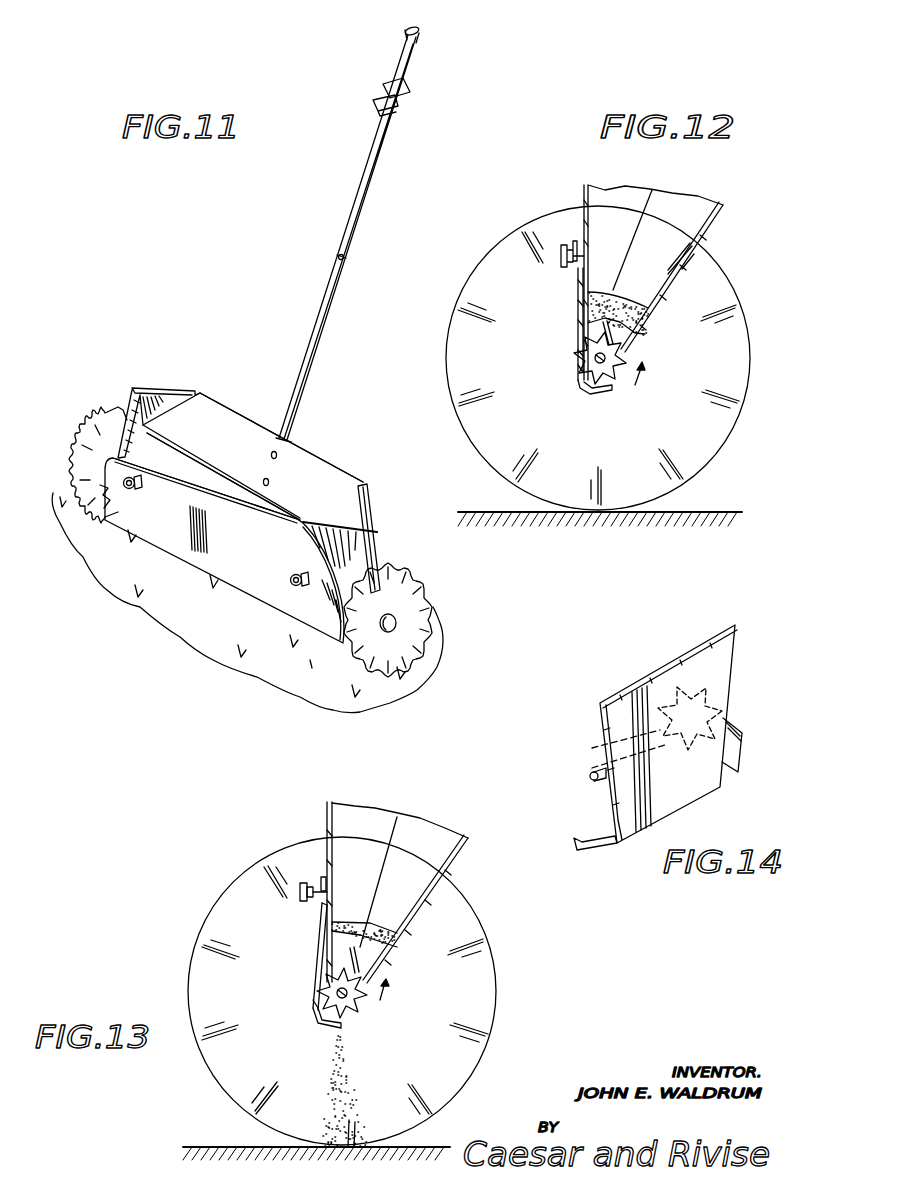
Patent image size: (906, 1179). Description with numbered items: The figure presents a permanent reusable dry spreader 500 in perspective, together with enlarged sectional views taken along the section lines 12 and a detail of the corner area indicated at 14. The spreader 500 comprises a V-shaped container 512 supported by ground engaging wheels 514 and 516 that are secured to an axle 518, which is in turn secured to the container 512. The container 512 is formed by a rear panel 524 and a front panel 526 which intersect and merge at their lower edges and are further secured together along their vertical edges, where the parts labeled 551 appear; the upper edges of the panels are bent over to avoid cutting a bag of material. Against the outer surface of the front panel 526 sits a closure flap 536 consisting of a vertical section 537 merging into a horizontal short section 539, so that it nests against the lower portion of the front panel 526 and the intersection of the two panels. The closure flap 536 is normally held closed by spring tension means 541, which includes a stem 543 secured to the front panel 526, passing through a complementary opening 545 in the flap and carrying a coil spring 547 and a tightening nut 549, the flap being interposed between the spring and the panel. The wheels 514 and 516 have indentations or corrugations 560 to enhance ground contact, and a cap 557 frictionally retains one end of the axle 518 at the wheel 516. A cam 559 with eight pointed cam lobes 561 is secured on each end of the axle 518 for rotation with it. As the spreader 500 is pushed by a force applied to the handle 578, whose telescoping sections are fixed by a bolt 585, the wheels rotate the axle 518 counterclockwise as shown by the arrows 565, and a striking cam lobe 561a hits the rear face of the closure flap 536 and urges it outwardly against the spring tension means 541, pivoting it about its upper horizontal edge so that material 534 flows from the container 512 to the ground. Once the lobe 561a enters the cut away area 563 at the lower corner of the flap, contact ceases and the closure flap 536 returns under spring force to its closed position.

In FIG. 11, the spreader 500 is at (420, 128).
In FIG. 13, the container 512 is at (366, 812).
In FIG. 11, the ground engaging wheel 514 is at (433, 586).
In FIG. 11, the ground engaging wheel 516 is at (110, 428).
In FIG. 12, the ground engaging wheel 516 is at (733, 286).
In FIG. 13, the ground engaging wheel 516 is at (490, 983).
In FIG. 12, the axle 518 is at (623, 361).
In FIG. 13, the axle 518 is at (352, 1012).
In FIG. 14, the axle 518 is at (590, 781).
In FIG. 11, the rear panel 524 is at (352, 482).
In FIG. 12, the rear panel 524 is at (725, 213).
In FIG. 13, the rear panel 524 is at (462, 852).
In FIG. 11, the front panel 526 is at (292, 515).
In FIG. 12, the front panel 526 is at (585, 190).
In FIG. 13, the front panel 526 is at (326, 810).
In FIG. 12, the material 534 is at (628, 298).
In FIG. 13, the material 534 is at (373, 925).
In FIG. 11, the closure flap 536 is at (197, 551).
In FIG. 12, the closure flap 536 is at (578, 322).
In FIG. 13, the closure flap 536 is at (318, 966).
In FIG. 14, the closure flap 536 is at (610, 745).
In FIG. 12, the vertical section 537 is at (578, 350).
In FIG. 13, the vertical section 537 is at (315, 998).
In FIG. 12, the horizontal short section 539 is at (608, 397).
In FIG. 13, the horizontal short section 539 is at (322, 1030).
In FIG. 14, the horizontal short section 539 is at (577, 849).
In FIG. 11, the spring tension means 541 is at (137, 491).
In FIG. 12, the spring tension means 541 is at (562, 252).
In FIG. 13, the stem 543 is at (300, 888).
In FIG. 13, the complementary opening 545 is at (320, 878).
In FIG. 13, the coil spring 547 is at (310, 898).
In FIG. 13, the tightening nut 549 is at (312, 882).
In FIG. 11, the end flange 551 is at (130, 386).
In FIG. 14, the cap 557 is at (737, 670).
In FIG. 12, the cam 559 is at (625, 352).
In FIG. 13, the cam 559 is at (365, 994).
In FIG. 14, the cam 559 is at (736, 730).
In FIG. 11, the indentations or corrugations 560 is at (68, 493).
In FIG. 14, the cam lobes 561 is at (738, 706).
In FIG. 13, the striking cam lobe 561a is at (318, 980).
In FIG. 14, the cut away areas 563 is at (740, 743).
In FIG. 12, the arrows 565 is at (635, 385).
In FIG. 13, the arrows 565 is at (380, 1000).
In FIG. 11, the handle 578 is at (355, 200).
In FIG. 11, the bolt 585 is at (338, 255).
In FIG. 11, the section lines 12 is at (240, 463).
In FIG. 12, the section line 14- 14 is at (566, 282).